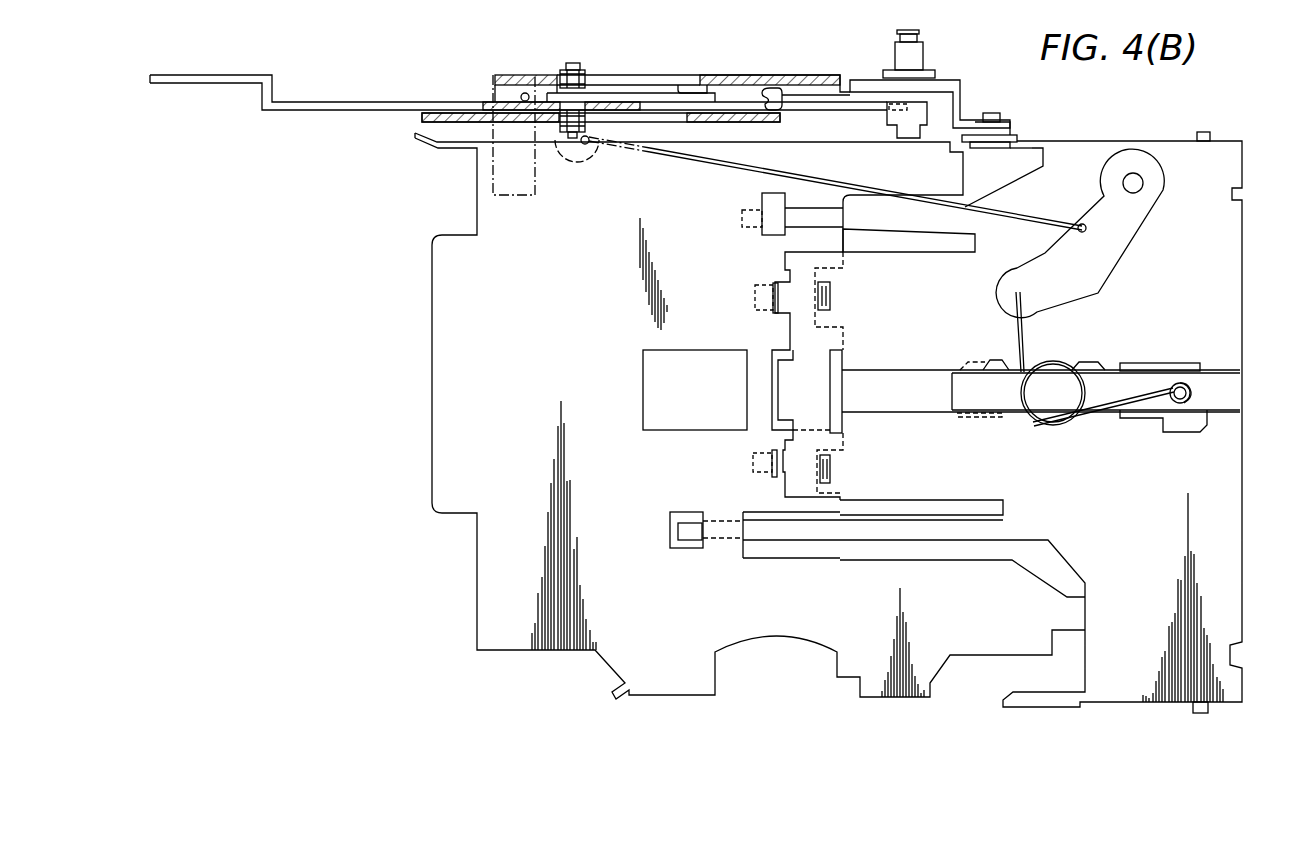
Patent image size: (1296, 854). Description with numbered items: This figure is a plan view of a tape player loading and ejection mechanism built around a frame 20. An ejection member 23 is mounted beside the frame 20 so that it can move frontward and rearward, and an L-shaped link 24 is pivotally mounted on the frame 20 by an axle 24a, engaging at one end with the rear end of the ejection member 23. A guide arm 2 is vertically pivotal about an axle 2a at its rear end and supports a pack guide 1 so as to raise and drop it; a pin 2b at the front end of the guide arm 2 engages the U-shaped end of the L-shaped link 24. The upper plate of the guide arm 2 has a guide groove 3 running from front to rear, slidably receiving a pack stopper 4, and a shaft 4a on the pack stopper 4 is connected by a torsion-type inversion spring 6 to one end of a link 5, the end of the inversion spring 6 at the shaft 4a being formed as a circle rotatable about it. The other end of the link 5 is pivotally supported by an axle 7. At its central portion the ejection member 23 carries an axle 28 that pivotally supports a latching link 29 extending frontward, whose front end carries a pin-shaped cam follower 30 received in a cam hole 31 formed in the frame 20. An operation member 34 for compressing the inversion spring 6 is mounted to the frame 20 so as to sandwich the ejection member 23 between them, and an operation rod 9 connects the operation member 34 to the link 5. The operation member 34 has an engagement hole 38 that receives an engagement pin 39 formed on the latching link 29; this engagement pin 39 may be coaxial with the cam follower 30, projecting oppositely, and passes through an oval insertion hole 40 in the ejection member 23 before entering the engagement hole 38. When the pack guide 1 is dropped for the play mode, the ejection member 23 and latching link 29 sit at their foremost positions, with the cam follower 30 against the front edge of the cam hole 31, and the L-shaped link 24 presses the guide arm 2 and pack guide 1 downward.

The pack guide 1 is at (432, 352).
The guide arm 2 is at (1240, 240).
The axle 2a is at (1203, 131).
The pin 2b is at (995, 113).
The guide groove 3 is at (890, 412).
The pack stopper 4 is at (988, 413).
The shaft 4a is at (1180, 404).
The link 5 is at (1130, 233).
The inversion spring 6 is at (1058, 426).
The axle 7 is at (1143, 183).
The operation rod 9 is at (1030, 214).
The frame 20 is at (720, 75).
The ejection member 23 is at (213, 76).
The L-shaped link 24 is at (958, 80).
The axle 24a is at (922, 55).
The axle 28 is at (690, 85).
The latching link 29 is at (623, 95).
The cam follower 30 is at (578, 68).
The cam hole 31 is at (560, 75).
The operation member 34 is at (780, 112).
The engagement hole 38 is at (665, 123).
The engagement pin 39 is at (578, 140).
The insertion hole 40 is at (590, 142).